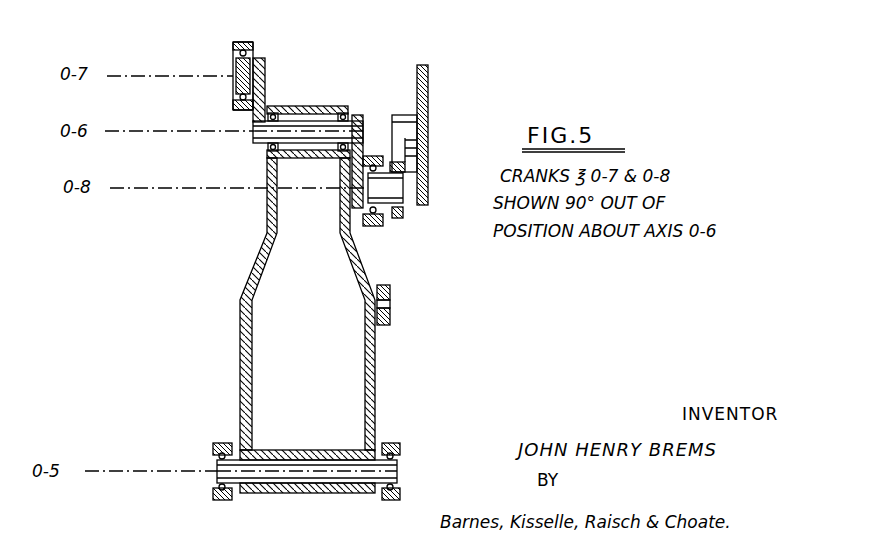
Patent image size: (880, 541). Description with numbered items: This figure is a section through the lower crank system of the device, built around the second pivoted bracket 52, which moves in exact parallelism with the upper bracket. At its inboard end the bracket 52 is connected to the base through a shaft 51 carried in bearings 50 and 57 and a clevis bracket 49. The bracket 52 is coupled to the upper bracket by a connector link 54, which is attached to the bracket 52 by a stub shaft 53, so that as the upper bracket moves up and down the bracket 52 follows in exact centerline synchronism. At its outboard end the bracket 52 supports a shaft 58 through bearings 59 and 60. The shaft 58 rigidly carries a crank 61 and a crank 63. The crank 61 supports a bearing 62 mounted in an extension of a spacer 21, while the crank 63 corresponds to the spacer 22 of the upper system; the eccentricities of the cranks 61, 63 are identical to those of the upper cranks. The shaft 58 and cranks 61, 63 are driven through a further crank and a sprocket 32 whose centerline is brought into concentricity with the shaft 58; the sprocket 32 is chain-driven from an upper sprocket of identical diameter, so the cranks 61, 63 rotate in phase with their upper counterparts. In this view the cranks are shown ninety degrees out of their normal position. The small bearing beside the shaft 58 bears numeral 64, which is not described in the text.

The spacer 21 is at (248, 42).
The spacer 22 is at (371, 227).
The sprocket 32 is at (430, 78).
The clevis bracket 49 is at (391, 444).
The bearing 50 is at (399, 486).
The shaft 51 is at (230, 463).
The second pivoted bracket 52 is at (243, 340).
The stub shaft 53 is at (391, 303).
The connector link 54 is at (388, 325).
The bearing 57 is at (219, 487).
The shaft 58 is at (253, 132).
The bearing 59 is at (267, 158).
The bearing 60 is at (348, 111).
The crank 61 is at (265, 77).
The bearing 62 is at (233, 56).
The crank 63 is at (363, 152).
The bearing 64 is at (382, 214).